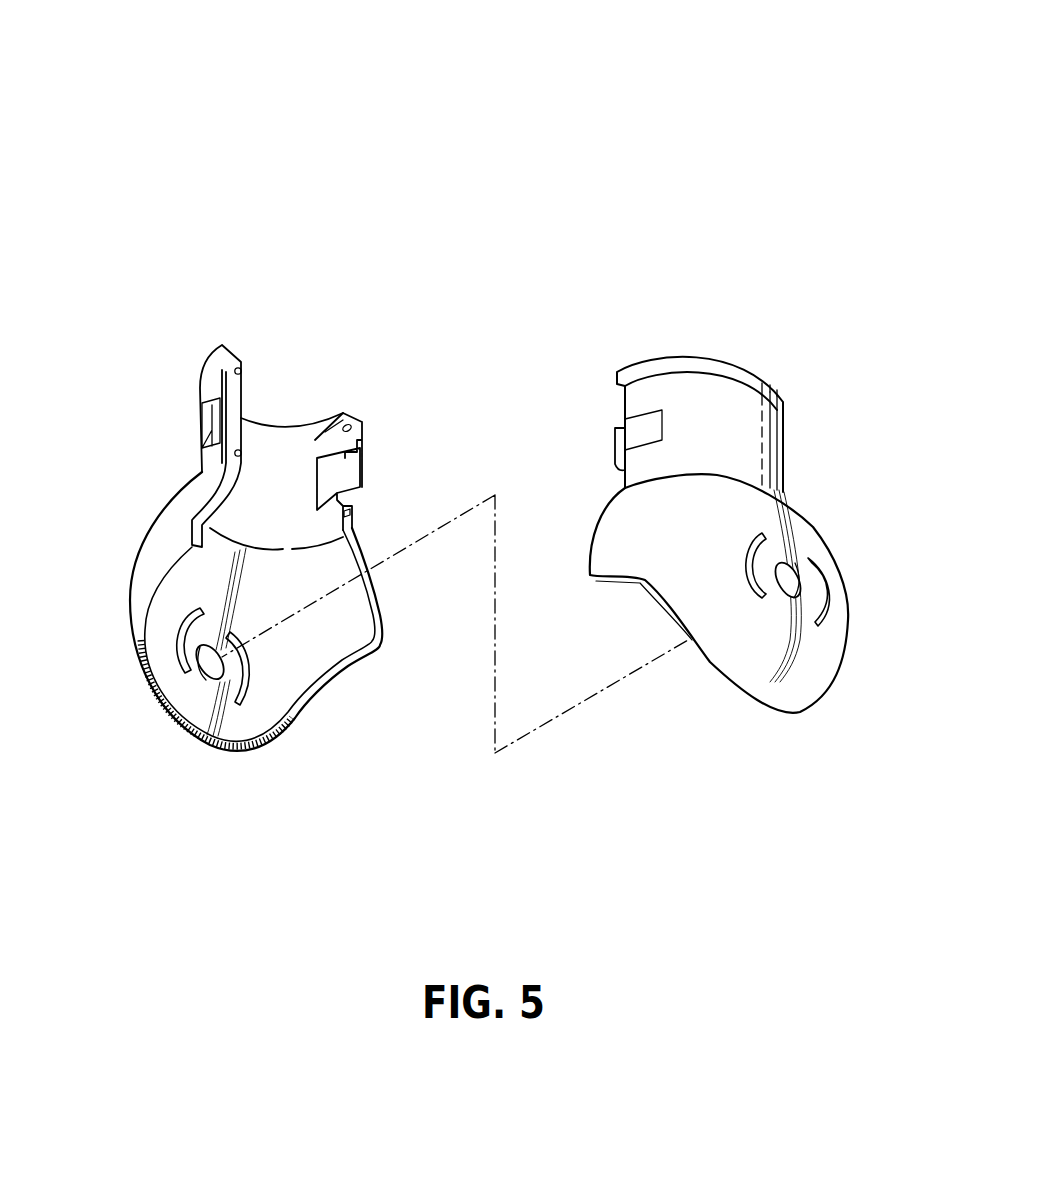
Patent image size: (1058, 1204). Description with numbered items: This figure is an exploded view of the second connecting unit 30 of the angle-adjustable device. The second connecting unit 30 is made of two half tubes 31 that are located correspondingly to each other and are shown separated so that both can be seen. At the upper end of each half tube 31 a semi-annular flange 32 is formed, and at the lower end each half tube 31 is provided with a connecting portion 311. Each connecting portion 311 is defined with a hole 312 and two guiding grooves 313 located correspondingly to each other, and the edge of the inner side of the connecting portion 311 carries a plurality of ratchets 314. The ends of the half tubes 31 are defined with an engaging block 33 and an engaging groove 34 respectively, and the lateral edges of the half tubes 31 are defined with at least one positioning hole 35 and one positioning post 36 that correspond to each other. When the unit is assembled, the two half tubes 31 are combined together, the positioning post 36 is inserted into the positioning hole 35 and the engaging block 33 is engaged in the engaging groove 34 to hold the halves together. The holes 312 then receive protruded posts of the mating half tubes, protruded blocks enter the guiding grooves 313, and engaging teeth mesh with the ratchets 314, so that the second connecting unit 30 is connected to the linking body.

The second connecting unit 30 is at (490, 158).
The half tube 31 is at (274, 440).
The connecting portion 311 is at (334, 643).
The hole 312 is at (208, 662).
The guiding groove 313 is at (238, 700).
The ratchets 314 is at (175, 717).
The semi-annular flange 32 is at (203, 362).
The engaging block 33 is at (349, 472).
The engaging groove 34 is at (203, 426).
The positioning hole 35 is at (241, 368).
The positioning post 36 is at (351, 425).